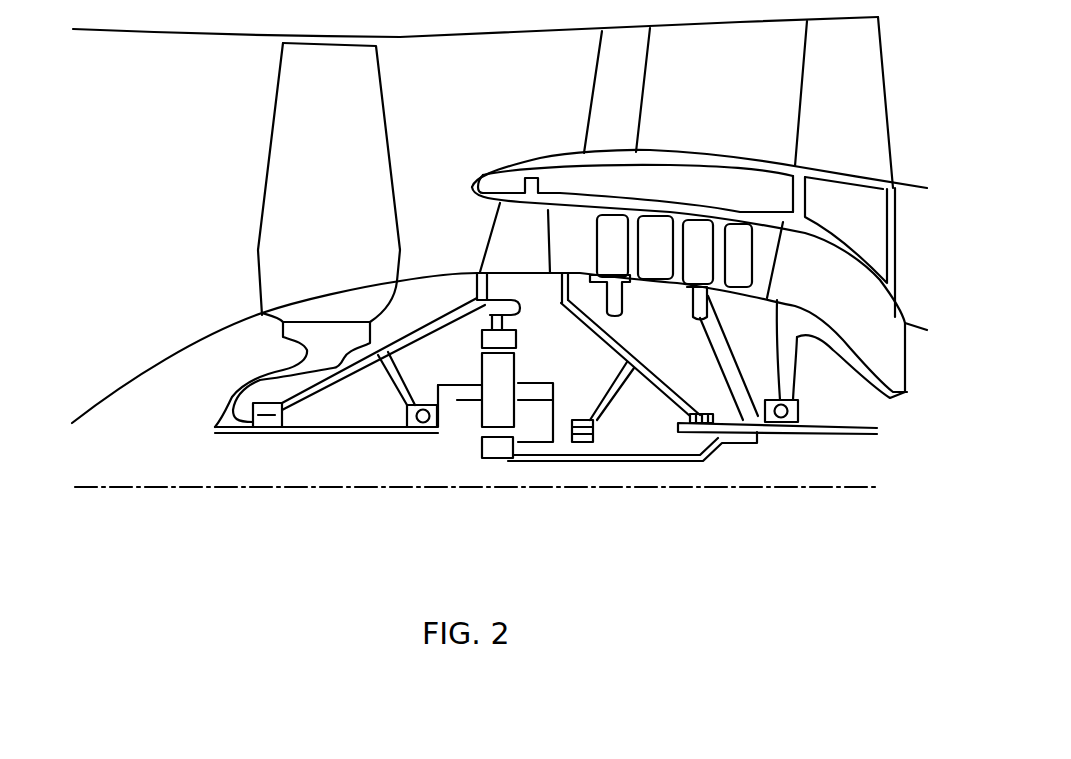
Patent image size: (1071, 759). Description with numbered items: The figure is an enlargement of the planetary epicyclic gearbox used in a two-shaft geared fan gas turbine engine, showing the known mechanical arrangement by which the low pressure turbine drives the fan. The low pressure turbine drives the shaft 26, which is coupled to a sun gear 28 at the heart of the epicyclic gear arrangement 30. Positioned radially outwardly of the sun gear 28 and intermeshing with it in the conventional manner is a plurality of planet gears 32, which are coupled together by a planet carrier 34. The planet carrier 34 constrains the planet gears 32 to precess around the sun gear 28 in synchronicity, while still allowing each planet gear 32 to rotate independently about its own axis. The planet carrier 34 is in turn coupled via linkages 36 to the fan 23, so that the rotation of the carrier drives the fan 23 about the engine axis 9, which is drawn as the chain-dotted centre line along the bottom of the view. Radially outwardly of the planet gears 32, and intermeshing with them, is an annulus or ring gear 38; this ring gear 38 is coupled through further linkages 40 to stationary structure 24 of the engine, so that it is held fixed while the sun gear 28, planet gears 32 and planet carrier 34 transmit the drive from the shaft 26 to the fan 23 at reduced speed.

The engine axis 9 is at (207, 487).
The fan 23 is at (296, 215).
The stationary structure 24 is at (515, 240).
The shaft 26 is at (760, 437).
The sun gear 28 is at (503, 450).
The epicyclic gear arrangement 30 is at (455, 428).
The planet gears 32 is at (490, 410).
The planet carrier 34 is at (540, 425).
The linkages 36 is at (450, 407).
The ring gear 38 is at (513, 341).
The linkages 40 is at (520, 303).